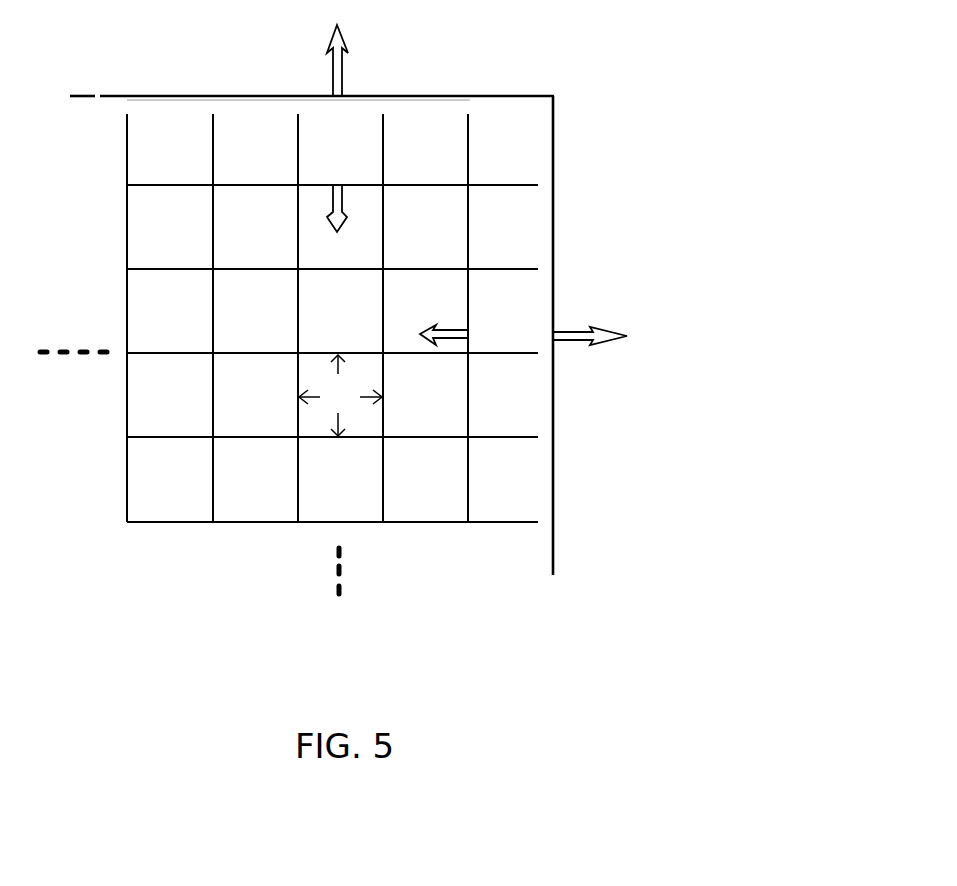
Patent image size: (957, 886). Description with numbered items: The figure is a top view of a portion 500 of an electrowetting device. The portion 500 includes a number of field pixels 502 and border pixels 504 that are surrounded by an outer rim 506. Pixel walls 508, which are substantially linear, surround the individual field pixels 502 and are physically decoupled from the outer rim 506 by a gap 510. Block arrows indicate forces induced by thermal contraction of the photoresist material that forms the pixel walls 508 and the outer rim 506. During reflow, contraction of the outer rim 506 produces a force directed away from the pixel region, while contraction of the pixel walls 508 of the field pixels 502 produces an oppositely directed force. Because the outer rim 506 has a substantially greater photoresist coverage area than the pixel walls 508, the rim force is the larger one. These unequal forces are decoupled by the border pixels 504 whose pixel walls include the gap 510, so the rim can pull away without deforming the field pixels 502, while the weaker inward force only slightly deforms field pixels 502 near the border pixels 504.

The portion of an electrowetting device 500 is at (694, 86).
The field pixels 502 is at (289, 354).
The border pixels 504 is at (418, 191).
The outer rim 506 is at (360, 296).
The pixel walls 508 is at (70, 408).
The gap 510 is at (545, 353).